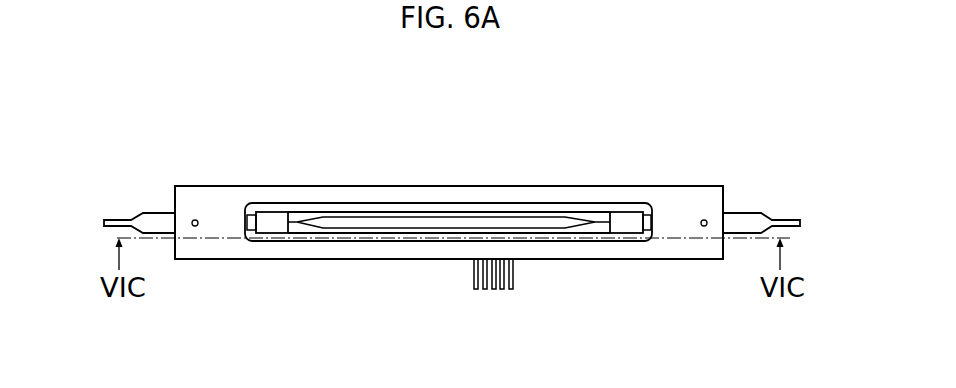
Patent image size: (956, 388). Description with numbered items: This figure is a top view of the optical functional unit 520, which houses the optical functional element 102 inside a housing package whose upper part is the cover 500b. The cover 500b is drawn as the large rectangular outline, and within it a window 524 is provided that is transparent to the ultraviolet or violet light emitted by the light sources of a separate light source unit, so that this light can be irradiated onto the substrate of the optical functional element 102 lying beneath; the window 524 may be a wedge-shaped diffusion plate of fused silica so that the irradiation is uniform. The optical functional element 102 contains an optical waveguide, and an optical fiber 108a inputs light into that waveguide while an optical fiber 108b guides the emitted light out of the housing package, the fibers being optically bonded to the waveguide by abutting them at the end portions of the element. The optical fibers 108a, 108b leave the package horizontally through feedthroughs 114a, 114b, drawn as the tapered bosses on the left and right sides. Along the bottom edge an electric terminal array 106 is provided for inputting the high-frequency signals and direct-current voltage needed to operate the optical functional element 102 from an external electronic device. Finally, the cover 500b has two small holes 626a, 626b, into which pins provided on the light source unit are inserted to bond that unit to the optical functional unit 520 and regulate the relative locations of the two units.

The optical functional unit 520 is at (581, 167).
The cover 500b is at (388, 197).
The window 524 is at (263, 209).
The optical functional element 102 is at (293, 208).
The feedthrough 114a is at (160, 222).
The feedthrough 114b is at (752, 222).
The optical fiber 108a is at (118, 218).
The optical fiber 108b is at (787, 220).
The hole 626a is at (196, 227).
The hole 626b is at (705, 227).
The electric terminal array 106 is at (520, 293).